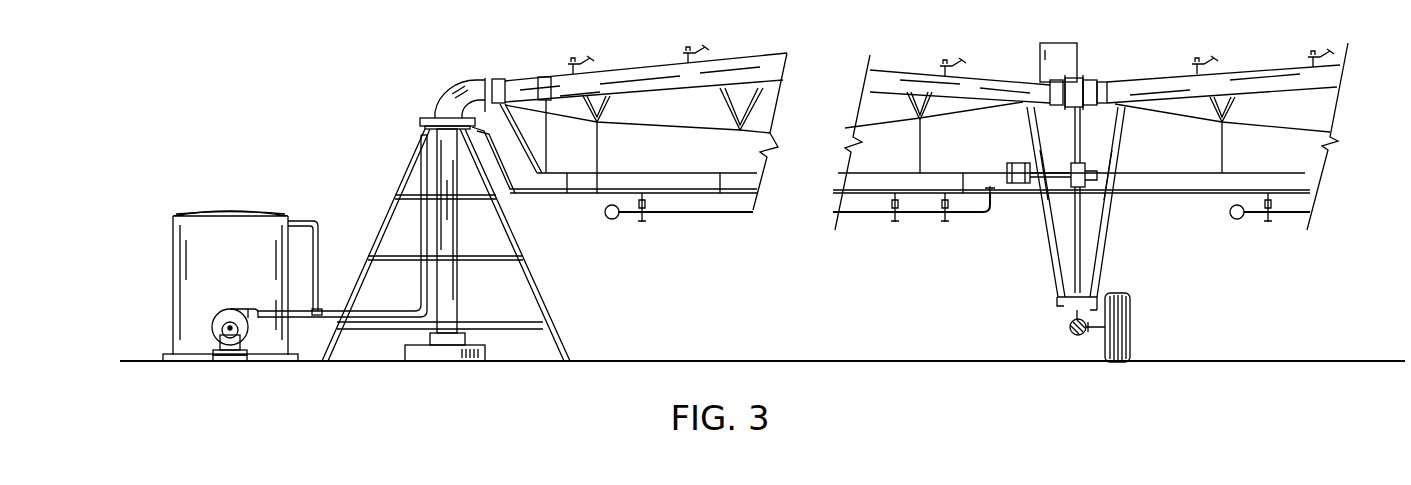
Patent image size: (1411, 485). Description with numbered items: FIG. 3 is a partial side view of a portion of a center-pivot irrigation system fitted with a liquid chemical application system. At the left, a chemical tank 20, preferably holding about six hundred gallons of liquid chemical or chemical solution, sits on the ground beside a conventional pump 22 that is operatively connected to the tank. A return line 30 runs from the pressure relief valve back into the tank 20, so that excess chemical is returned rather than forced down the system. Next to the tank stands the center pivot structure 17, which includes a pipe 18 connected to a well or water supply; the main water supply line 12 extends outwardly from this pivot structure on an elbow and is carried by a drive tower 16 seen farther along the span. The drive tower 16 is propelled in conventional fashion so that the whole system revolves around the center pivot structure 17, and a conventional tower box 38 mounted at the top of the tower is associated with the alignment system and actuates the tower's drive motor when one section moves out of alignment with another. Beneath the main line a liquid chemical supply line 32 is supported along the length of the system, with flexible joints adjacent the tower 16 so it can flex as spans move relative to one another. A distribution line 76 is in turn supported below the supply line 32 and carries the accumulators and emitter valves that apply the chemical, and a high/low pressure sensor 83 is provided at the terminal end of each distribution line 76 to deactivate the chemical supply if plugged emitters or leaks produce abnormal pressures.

The main water supply line 12 is at (635, 72).
The drive tower 16 is at (1115, 245).
The center pivot structure 17 is at (423, 240).
The pipe 18 is at (445, 223).
The chemical tank 20 is at (215, 238).
The pump 22 is at (243, 333).
The return line 30 is at (318, 238).
The liquid chemical supply line 32 is at (613, 187).
The tower box 38 is at (1066, 50).
The distribution line 76 is at (718, 215).
The high/low pressure sensor 83 is at (612, 219).